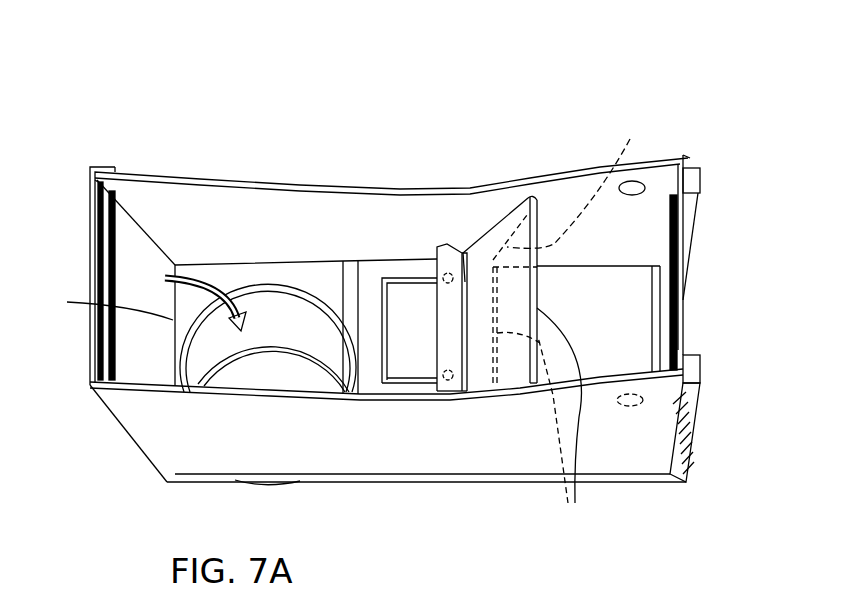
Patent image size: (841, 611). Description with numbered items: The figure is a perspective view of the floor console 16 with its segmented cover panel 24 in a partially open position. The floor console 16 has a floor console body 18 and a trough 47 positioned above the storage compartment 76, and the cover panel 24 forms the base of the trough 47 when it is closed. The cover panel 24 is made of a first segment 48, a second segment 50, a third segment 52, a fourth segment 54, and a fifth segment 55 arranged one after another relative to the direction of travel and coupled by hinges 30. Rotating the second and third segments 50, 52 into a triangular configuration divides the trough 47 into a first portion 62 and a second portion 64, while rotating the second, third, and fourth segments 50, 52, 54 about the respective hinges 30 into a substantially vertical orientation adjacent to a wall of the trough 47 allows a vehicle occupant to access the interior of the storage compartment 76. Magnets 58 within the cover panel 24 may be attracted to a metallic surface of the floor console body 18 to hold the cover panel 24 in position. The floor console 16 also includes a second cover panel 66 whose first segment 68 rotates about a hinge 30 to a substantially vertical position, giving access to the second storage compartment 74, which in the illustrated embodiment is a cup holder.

The floor console 16 is at (344, 150).
The floor console body 18 is at (238, 452).
The cover panel 24 is at (502, 198).
The hinge 30 is at (468, 158).
The trough 47 is at (584, 145).
The first segment 48 is at (447, 332).
The second segment 50 is at (511, 372).
The third segment 52 is at (577, 182).
The fourth segment 54 is at (625, 334).
The fifth segment 55 is at (664, 317).
The magnets 58 is at (435, 336).
The first portion 62 is at (651, 206).
The second portion 64 is at (265, 228).
The second cover panel 66 is at (148, 212).
The first segment of second cover panel 68 is at (148, 364).
The second storage compartment 74 is at (287, 321).
The storage compartment 76 is at (410, 312).